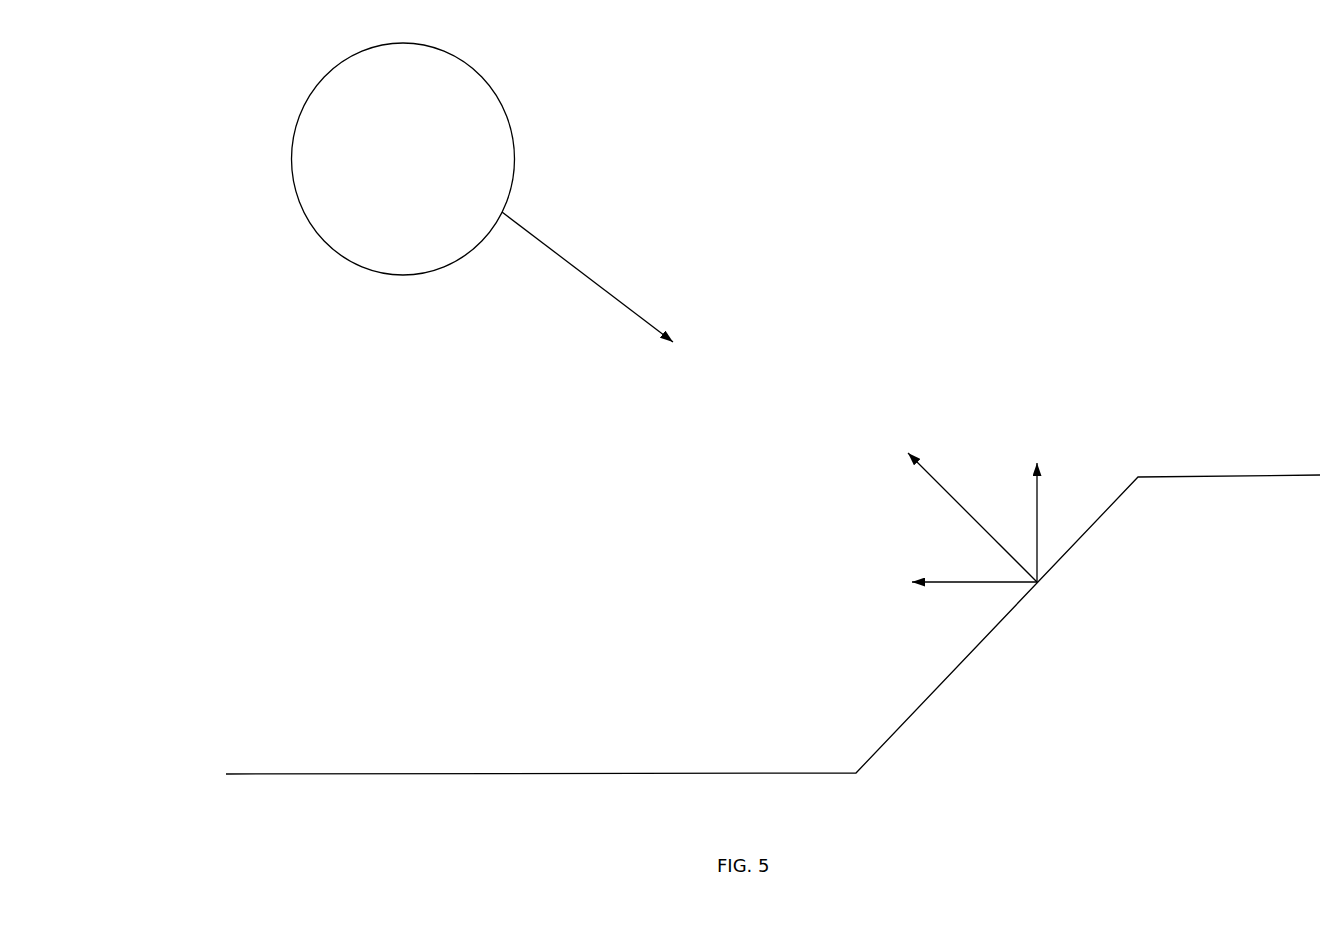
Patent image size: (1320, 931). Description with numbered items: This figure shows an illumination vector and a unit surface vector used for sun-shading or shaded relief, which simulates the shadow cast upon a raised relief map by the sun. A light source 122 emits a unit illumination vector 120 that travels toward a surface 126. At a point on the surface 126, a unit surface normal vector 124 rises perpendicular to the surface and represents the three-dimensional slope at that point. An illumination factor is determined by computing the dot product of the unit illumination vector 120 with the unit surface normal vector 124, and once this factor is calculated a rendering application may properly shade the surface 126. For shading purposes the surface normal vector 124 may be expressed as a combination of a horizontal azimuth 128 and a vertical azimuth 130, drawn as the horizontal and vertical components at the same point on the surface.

The unit illumination vector 120 is at (553, 280).
The light source 122 is at (403, 159).
The unit surface normal vector 124 is at (968, 486).
The surface 126 is at (913, 692).
The horizontal azimuth 128 is at (992, 586).
The vertical azimuth 130 is at (1040, 523).